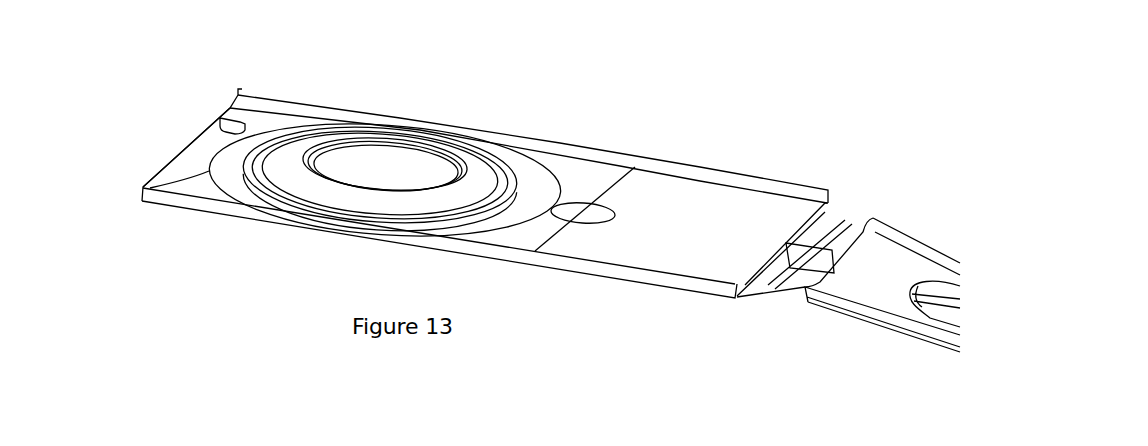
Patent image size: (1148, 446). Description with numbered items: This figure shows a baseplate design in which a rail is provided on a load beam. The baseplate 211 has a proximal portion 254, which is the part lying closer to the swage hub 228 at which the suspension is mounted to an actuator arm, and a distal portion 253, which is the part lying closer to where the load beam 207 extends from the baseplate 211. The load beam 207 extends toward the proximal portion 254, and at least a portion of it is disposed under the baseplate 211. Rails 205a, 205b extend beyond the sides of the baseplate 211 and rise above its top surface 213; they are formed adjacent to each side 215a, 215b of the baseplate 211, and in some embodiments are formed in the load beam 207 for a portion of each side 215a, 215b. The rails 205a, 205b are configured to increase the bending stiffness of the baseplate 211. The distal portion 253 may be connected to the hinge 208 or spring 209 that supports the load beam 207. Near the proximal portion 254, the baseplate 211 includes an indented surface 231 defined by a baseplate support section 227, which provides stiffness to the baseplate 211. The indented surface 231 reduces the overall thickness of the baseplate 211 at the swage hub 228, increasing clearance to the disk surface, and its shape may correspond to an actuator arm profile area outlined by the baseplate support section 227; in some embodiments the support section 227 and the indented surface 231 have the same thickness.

The rail 205a is at (518, 138).
The rail 205b is at (231, 214).
The load beam 207 is at (897, 224).
The hinge 208 is at (844, 222).
The spring 209 is at (678, 302).
The baseplate 211 is at (224, 110).
The top surface 213 is at (620, 181).
The side 215a is at (709, 181).
The side 215b is at (737, 297).
The baseplate support section 227 is at (577, 159).
The swage hub 228 is at (363, 130).
The indented surface 231 is at (219, 168).
The distal portion 253 is at (758, 249).
The proximal portion 254 is at (213, 147).